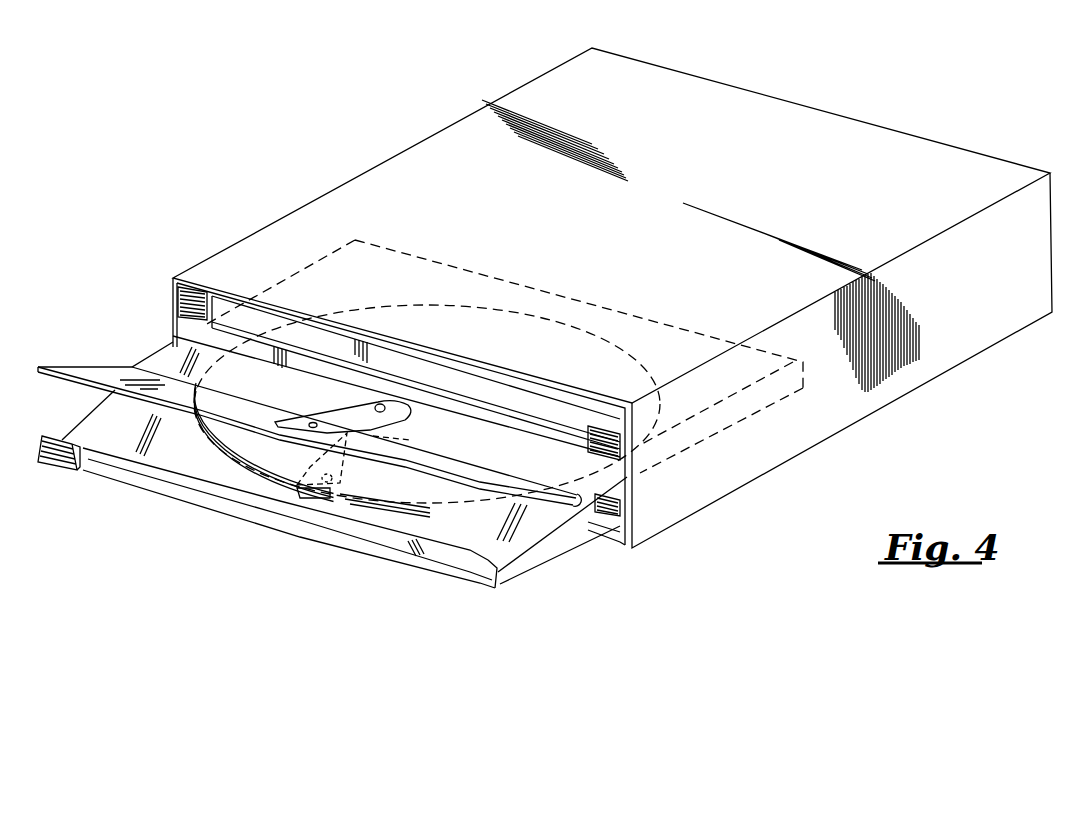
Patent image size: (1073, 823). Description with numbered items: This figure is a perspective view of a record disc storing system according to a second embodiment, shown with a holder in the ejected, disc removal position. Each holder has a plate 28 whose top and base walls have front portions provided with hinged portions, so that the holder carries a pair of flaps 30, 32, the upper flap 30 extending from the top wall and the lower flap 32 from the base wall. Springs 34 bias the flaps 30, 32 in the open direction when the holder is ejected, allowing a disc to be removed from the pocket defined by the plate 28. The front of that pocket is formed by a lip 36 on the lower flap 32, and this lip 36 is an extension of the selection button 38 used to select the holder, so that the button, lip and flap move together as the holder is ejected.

The plate 28 is at (617, 477).
The flap 30 is at (473, 473).
The flap 32 is at (525, 541).
The spring 34 is at (353, 418).
The lip 36 is at (505, 390).
The selection button 38 is at (183, 303).